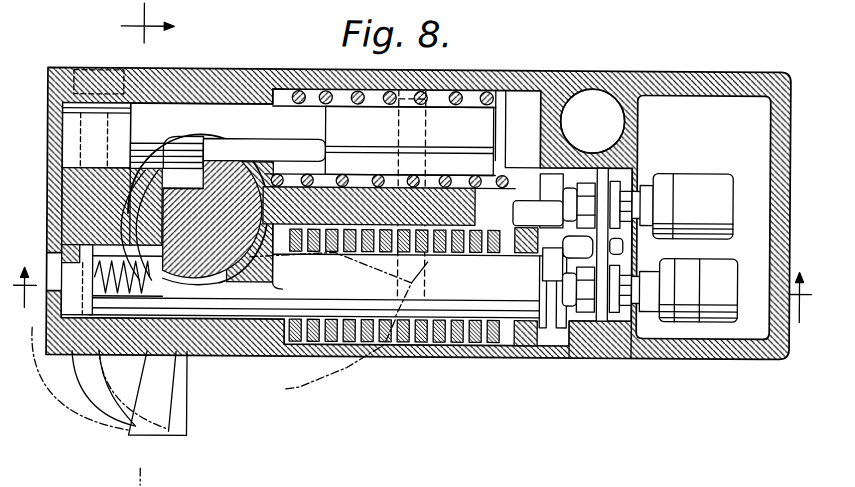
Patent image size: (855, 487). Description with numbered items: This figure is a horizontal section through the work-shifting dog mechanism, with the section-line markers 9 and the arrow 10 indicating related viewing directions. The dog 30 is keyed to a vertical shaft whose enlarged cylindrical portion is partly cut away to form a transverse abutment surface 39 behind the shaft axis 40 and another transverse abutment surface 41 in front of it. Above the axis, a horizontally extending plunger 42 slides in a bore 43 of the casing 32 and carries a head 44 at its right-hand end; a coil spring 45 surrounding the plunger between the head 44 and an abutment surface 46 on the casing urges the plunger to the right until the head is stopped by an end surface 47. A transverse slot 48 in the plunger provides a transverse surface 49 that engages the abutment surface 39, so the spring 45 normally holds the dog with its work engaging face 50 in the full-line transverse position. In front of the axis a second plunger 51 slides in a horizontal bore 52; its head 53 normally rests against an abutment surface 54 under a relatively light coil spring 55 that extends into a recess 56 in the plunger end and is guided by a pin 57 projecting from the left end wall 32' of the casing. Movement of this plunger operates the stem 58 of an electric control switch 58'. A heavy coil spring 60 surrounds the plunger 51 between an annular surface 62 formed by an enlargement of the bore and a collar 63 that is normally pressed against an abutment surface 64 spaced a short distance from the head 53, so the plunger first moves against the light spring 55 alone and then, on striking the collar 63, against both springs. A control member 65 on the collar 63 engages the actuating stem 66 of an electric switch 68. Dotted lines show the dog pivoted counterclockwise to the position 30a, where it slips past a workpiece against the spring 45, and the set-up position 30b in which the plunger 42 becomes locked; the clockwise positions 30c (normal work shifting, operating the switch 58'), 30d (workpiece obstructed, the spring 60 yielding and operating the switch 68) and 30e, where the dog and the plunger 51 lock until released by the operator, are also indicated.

The section line 9- 9 is at (412, 284).
The switch assembly 10 is at (134, 23).
The dog 30 is at (187, 440).
The dotted line position of dog 30a is at (348, 372).
The dotted line position of dog 30b is at (412, 283).
The dotted line position of dog 30c is at (170, 422).
The position of dog 30d is at (130, 410).
The position of dog 30e is at (75, 395).
The casing 32 is at (418, 233).
The left end wall of casing 32' is at (67, 95).
The abutment surface 39 is at (227, 155).
The shaft axis 40 is at (283, 262).
The abutment surface 41 is at (213, 355).
The plunger 42 is at (290, 80).
The bore 43 is at (151, 104).
The head 44 is at (518, 100).
The coil spring 45 is at (425, 96).
The abutment surface 46 is at (262, 90).
The end surface 47 is at (553, 88).
The transverse slot 48 is at (253, 143).
The transverse surface 49 is at (182, 141).
The work engaging face 50 is at (187, 403).
The second plunger 51 is at (520, 289).
The bore 52 is at (233, 356).
The head 53 is at (600, 347).
The abutment surface 54 is at (603, 350).
The coil spring 55 is at (62, 250).
The recess 56 is at (148, 291).
The pin 57 is at (63, 258).
The stem 58 is at (667, 342).
The electric control switch 58' is at (688, 334).
The heavy coil spring 60 is at (452, 342).
The annular surface 62 is at (270, 297).
The collar 63 is at (512, 342).
The abutment surface 64 is at (553, 357).
The control member 65 is at (525, 210).
The actuating stem 66 is at (576, 193).
The electric switch 68 is at (685, 173).